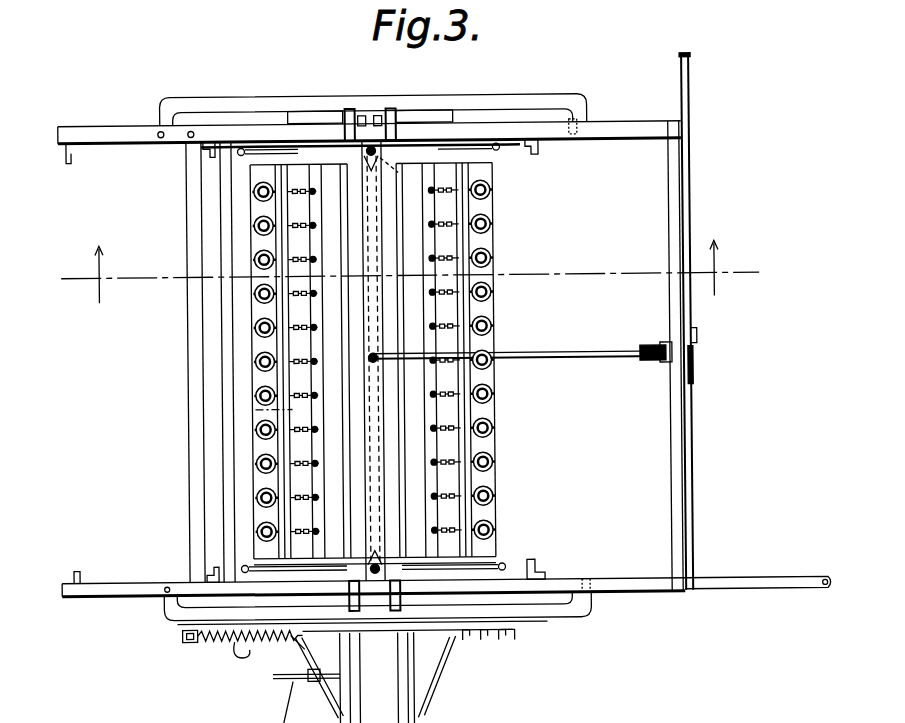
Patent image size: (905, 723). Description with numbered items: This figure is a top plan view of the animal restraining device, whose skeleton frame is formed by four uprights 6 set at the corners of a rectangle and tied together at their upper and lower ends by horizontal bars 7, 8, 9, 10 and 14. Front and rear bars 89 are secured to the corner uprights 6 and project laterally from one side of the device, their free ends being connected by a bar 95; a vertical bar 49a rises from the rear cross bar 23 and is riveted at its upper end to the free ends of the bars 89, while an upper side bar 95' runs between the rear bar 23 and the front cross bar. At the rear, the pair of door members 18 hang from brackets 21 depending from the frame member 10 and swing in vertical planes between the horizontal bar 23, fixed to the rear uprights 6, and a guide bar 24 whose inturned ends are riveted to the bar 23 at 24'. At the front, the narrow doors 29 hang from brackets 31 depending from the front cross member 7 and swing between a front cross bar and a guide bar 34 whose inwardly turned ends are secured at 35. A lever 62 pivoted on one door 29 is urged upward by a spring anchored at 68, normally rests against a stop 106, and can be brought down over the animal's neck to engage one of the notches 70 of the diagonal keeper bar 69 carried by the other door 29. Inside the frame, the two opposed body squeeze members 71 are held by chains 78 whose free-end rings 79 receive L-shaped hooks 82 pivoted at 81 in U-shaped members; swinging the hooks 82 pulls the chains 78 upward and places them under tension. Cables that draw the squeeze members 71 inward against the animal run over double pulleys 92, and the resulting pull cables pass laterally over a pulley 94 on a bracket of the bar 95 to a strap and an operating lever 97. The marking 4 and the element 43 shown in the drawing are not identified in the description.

The section line 4- 4 is at (403, 272).
The uprights 6 is at (211, 140).
The front cross member 7 is at (308, 660).
The horizontal bar 8 is at (472, 262).
The horizontal bar 9 is at (604, 351).
The frame member 10 is at (487, 123).
The horizontal bar 14 is at (271, 409).
The door or closure members 18 is at (306, 110).
The brackets 21 is at (394, 108).
The horizontal bar 23 is at (192, 137).
The guide bar 24 is at (362, 102).
The riveted connections 24' is at (361, 158).
The narrow doors 29 is at (470, 598).
The brackets 31 is at (367, 570).
The guide bar 34 is at (225, 641).
The riveted connections 35 is at (165, 584).
The bar extension 43 is at (722, 593).
The vertical bar 49a is at (70, 160).
The lever 62 is at (383, 632).
The spring anchorage 68 is at (186, 641).
The keeper bar 69 is at (506, 640).
The notches 70 is at (498, 455).
The body squeeze members 71 is at (503, 304).
The chains 78 is at (300, 228).
The rings 79 is at (505, 212).
The pivot 81 is at (400, 172).
The L-shaped hook 82 is at (255, 258).
The front and rear bars 89 is at (622, 618).
The double pulleys 92 is at (366, 376).
The pulley 94 is at (643, 363).
The bar 95 is at (697, 321).
The upper side bar 95' is at (151, 362).
The lever 97 is at (694, 334).
The stop 106 is at (240, 657).